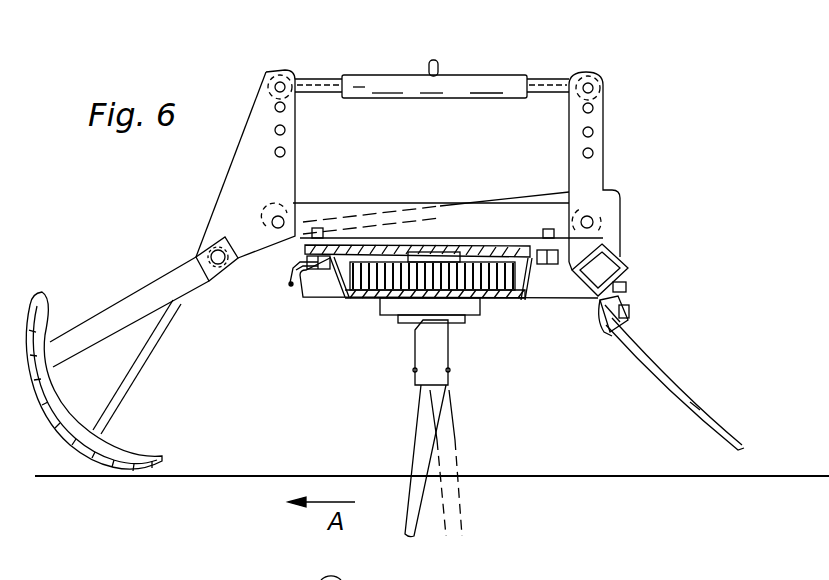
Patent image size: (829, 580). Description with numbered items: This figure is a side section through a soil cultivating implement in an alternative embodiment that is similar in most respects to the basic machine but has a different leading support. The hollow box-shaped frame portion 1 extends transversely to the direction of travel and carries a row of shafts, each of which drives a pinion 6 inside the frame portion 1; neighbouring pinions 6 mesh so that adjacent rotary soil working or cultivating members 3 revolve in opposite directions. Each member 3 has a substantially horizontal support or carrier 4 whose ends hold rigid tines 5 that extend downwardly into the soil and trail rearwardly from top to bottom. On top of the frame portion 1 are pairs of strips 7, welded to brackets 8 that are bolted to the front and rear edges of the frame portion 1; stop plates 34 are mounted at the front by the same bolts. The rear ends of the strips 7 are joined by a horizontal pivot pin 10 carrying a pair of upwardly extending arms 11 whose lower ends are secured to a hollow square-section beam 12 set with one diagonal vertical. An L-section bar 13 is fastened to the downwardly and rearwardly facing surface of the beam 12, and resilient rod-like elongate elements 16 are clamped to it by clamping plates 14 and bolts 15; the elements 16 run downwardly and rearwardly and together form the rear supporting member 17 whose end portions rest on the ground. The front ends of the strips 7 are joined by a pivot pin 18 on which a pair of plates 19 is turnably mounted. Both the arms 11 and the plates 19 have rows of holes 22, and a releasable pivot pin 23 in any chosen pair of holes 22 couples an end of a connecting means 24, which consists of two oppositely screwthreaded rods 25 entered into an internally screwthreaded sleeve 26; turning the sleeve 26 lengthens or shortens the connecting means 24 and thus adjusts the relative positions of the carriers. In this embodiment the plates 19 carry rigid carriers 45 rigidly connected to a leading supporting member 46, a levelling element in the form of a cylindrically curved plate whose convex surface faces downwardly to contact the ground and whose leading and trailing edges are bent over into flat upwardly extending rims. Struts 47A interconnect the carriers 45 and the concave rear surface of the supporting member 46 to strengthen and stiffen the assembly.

The hollow box-shaped frame portion 1 is at (363, 301).
The rotary soil working or cultivating member 3 is at (414, 403).
The support or carrier 4 is at (443, 355).
The rigid tine 5 is at (425, 471).
The pinion 6 is at (494, 299).
The strip 7 is at (366, 208).
The bracket 8 is at (334, 243).
The horizontal pivot pin 10 is at (598, 221).
The upwardly extending arm 11 is at (598, 171).
The beam 12 is at (614, 264).
The bar of L-shaped cross-section 13 is at (626, 291).
The clamping plate 14 is at (602, 313).
The bolt 15 is at (604, 336).
The elongate element 16 is at (673, 393).
The rear supporting member 17 is at (697, 405).
The pivot pin 18 is at (271, 210).
The plate 19 is at (229, 169).
The hole 22 is at (286, 130).
The releasable pivot pin 23 is at (276, 87).
The connecting means 24 is at (414, 74).
The screwthreaded rod 25 is at (320, 91).
The internally screwthreaded sleeve 26 is at (429, 99).
The stop plate 34 is at (297, 285).
The rigid carrier 45 is at (162, 277).
The leading supporting member 46 is at (72, 443).
The strut 47A is at (104, 413).